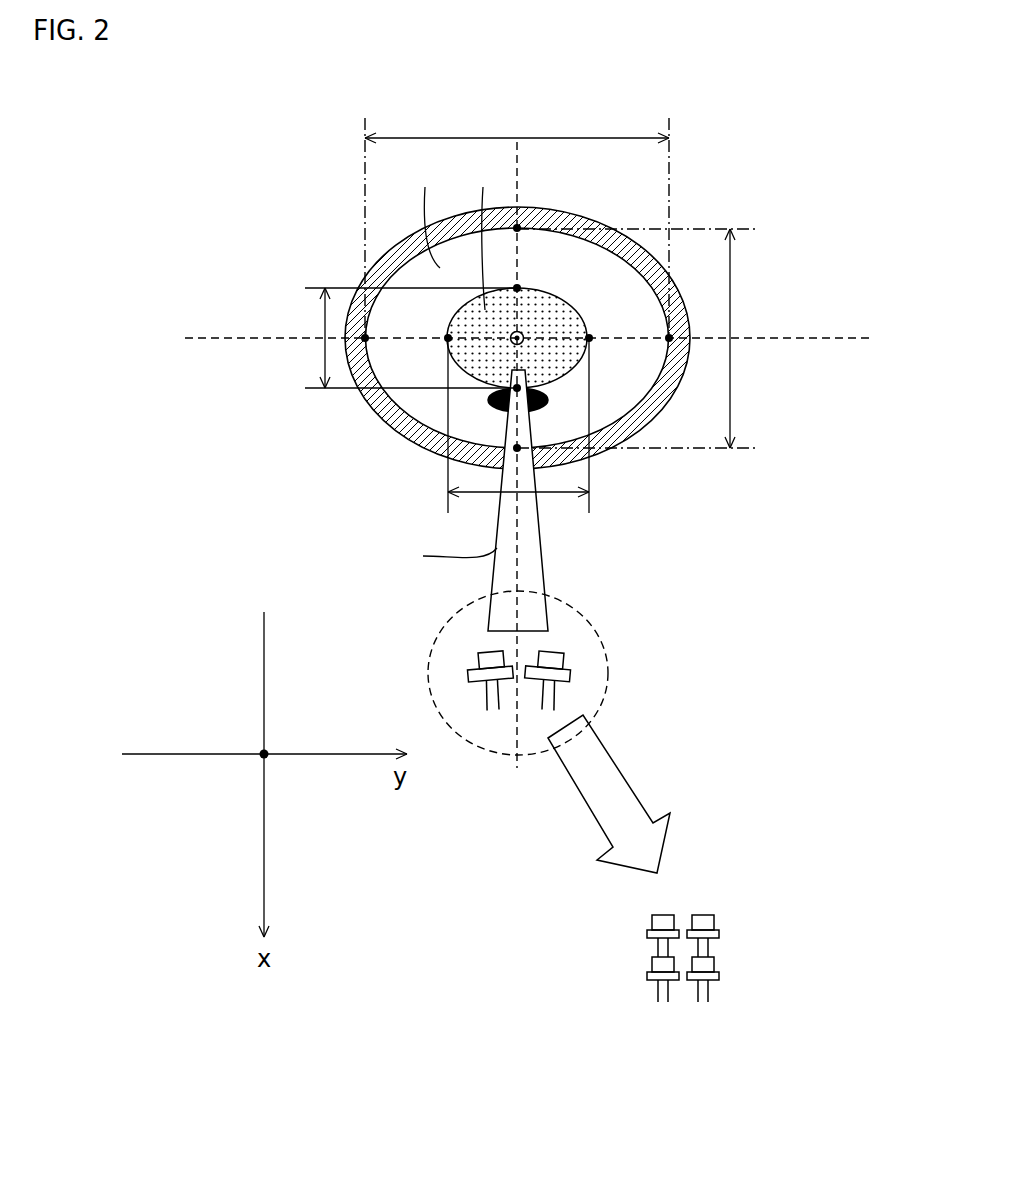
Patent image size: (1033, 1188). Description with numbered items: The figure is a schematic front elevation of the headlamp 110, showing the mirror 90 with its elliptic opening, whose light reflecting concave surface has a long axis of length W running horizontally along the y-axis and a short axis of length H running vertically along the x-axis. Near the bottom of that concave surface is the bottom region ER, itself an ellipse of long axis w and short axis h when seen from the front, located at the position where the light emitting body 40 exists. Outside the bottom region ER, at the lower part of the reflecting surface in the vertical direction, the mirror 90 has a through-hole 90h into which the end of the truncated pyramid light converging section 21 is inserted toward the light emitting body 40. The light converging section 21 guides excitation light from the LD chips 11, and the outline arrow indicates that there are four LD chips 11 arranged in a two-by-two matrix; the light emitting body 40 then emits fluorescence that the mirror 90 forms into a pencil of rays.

The headlamp 110 is at (761, 142).
The mirror 90 is at (388, 260).
The through-hole 90h is at (493, 408).
The light emitting body 40 is at (525, 333).
The truncated pyramid light converging section 21 is at (542, 546).
The LD chip 11 is at (480, 660).